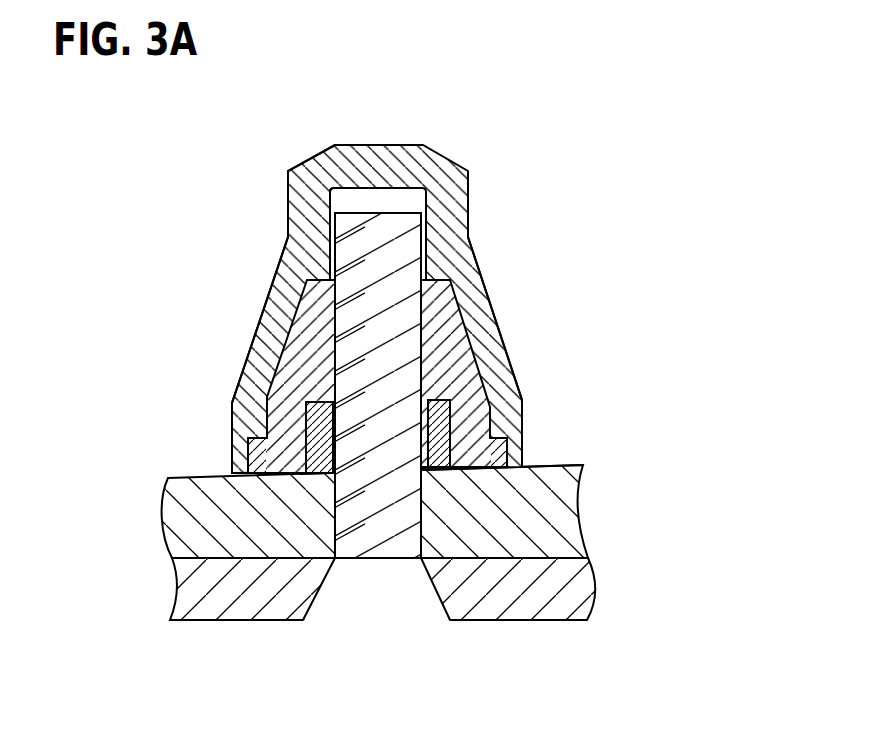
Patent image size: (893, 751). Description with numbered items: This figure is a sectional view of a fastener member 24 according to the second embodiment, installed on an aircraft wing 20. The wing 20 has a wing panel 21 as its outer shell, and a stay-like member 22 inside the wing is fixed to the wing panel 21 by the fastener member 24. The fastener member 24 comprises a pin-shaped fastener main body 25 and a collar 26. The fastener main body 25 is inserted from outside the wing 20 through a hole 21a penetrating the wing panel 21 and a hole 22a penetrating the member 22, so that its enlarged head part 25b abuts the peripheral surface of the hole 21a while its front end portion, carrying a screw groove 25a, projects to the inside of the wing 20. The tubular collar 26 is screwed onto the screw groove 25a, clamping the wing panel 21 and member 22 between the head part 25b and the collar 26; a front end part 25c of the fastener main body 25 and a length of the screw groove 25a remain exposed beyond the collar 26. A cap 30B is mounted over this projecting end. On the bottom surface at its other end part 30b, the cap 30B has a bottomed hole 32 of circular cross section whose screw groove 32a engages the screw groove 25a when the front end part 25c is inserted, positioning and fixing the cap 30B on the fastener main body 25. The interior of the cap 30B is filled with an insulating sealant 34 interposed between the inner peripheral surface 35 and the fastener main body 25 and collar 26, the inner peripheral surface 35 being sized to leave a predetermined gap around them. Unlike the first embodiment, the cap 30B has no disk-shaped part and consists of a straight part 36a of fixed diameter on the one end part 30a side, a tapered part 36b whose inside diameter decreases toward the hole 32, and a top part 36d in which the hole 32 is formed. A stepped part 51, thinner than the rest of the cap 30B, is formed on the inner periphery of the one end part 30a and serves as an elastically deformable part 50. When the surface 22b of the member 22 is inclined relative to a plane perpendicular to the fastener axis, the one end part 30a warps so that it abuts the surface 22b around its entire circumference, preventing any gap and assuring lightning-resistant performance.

The wing 20 is at (423, 582).
The wing panel 21 is at (407, 628).
The hole 21a is at (447, 607).
The member 22 is at (423, 505).
The hole 22a is at (420, 548).
The surface 22b is at (567, 457).
The fastener member 24 is at (390, 368).
The fastener main body 25 is at (317, 381).
The screw groove 25a is at (318, 374).
The head part 25b is at (308, 597).
The front end part 25c is at (403, 212).
The collar 26 is at (248, 450).
The cap 30B is at (390, 268).
The one end part 30a is at (520, 420).
The other end part 30b is at (398, 145).
The hole 32 is at (416, 195).
The screw groove 32a is at (345, 196).
The sealant 34 is at (306, 284).
The inner peripheral surface 35 is at (458, 334).
The straight part 36a is at (233, 443).
The tapered part 36b is at (268, 290).
The top part 36d is at (288, 190).
The elastically deformable part 50 is at (565, 442).
The stepped part 51 is at (497, 444).